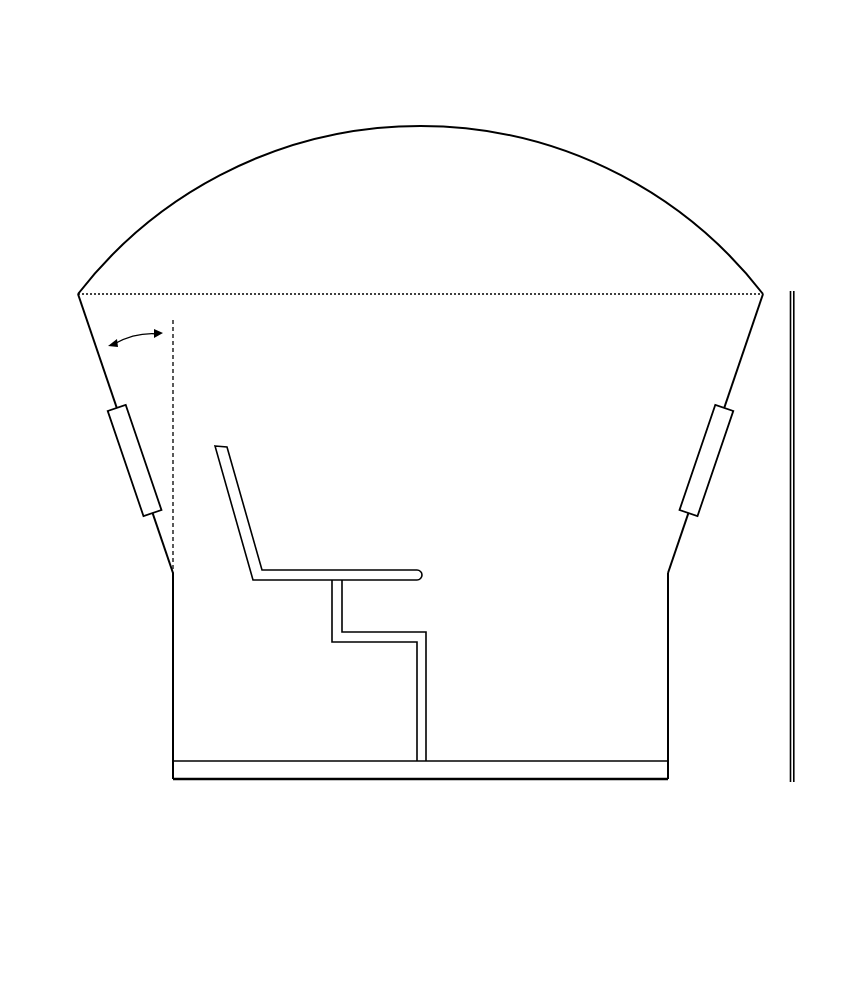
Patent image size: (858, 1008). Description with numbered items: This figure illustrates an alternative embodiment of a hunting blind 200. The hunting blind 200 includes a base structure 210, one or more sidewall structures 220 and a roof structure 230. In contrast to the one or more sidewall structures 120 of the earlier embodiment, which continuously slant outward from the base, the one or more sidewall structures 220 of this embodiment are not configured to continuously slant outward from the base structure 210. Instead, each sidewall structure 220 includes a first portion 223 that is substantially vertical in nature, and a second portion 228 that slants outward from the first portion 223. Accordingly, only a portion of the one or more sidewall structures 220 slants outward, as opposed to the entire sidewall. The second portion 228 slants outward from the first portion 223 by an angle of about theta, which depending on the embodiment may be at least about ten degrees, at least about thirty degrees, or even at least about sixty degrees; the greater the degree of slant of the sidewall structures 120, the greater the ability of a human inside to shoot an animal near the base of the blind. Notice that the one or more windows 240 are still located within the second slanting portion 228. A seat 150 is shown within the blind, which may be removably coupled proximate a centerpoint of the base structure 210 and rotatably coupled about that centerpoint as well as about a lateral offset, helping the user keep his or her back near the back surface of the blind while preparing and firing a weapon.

The hunting blind 200 is at (215, 84).
The roof structure 230 is at (612, 169).
The second portion 228 is at (747, 338).
The windows 240 is at (716, 466).
The sidewall structure 220 is at (794, 536).
The sidewall structures 120 is at (452, 676).
The first portion 223 is at (665, 695).
The base structure 210 is at (669, 771).
The seat 150 is at (444, 637).